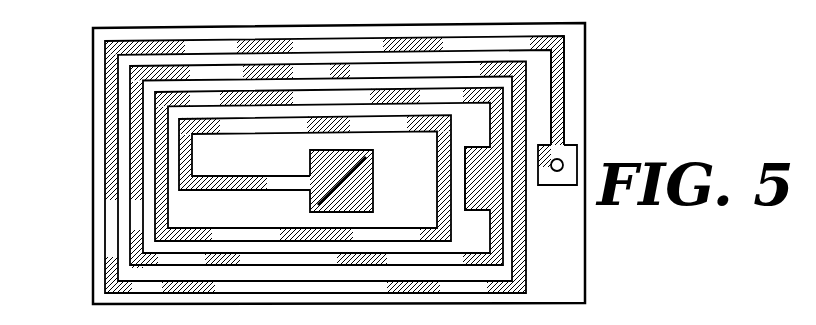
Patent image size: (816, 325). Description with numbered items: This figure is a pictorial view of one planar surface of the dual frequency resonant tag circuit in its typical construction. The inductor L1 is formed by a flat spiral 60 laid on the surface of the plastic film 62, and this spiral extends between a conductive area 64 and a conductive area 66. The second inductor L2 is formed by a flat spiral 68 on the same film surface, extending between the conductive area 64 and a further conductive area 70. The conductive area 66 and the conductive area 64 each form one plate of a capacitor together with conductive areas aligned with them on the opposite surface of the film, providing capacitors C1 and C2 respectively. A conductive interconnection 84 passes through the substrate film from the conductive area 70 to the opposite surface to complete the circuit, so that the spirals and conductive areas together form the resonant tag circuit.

The flat spiral 60 is at (193, 228).
The plastic film 62 is at (93, 256).
The conductive area 64 is at (478, 187).
The conductive area 66 is at (374, 178).
The flat spiral 68 is at (558, 70).
The conductive area 70 is at (569, 186).
The conductive interconnection 84 is at (565, 158).